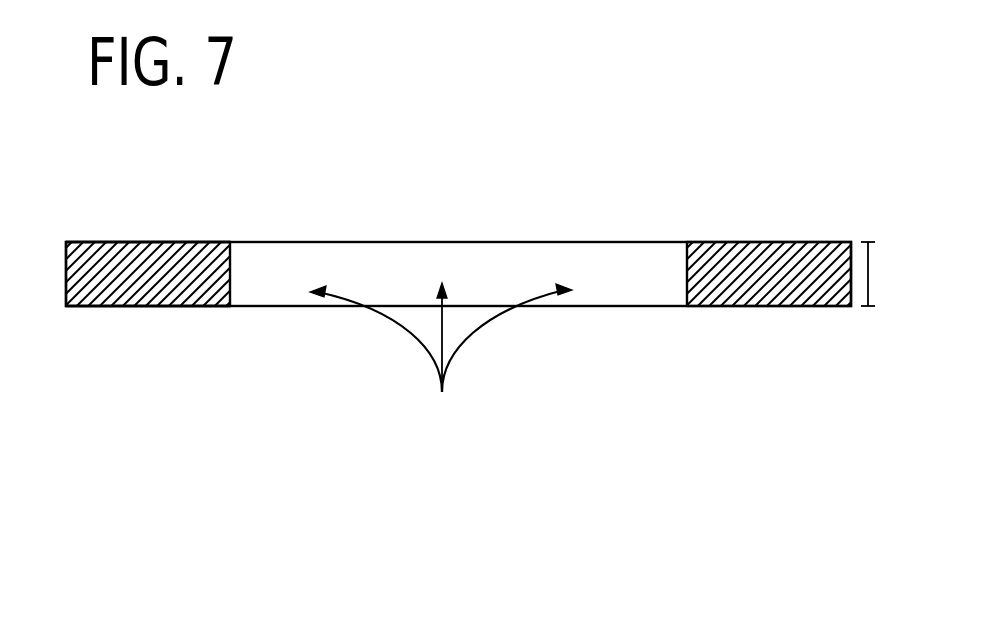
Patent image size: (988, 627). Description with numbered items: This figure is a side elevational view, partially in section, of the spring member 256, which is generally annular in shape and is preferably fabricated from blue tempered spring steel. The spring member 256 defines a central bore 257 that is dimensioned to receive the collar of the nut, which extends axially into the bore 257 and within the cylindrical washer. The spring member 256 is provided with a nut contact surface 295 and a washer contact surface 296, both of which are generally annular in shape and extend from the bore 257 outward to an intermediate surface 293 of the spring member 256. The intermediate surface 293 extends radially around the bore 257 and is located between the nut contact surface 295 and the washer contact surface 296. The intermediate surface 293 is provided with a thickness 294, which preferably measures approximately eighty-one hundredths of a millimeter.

The intermediate surface 293 is at (66, 274).
The thickness 294 is at (868, 272).
The nut contact surface 295 is at (196, 242).
The washer contact surface 296 is at (132, 306).
The spring member 256 is at (769, 275).
The bore 257 is at (442, 392).